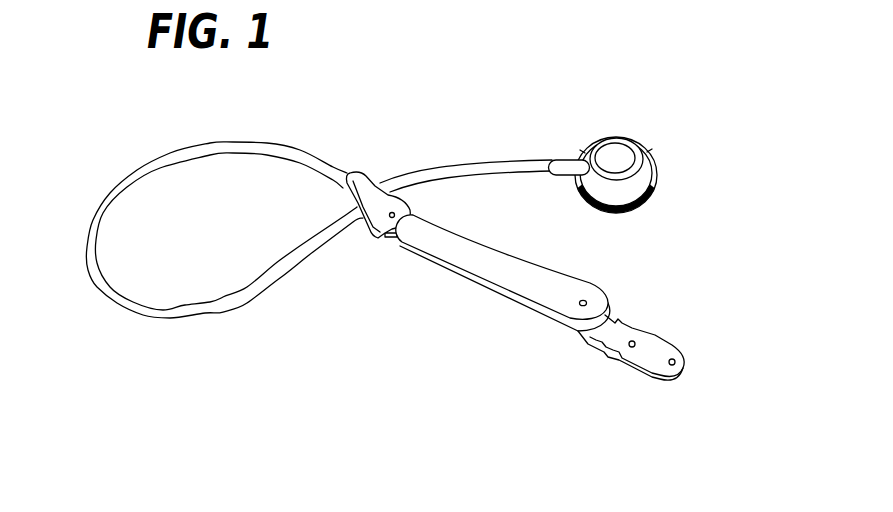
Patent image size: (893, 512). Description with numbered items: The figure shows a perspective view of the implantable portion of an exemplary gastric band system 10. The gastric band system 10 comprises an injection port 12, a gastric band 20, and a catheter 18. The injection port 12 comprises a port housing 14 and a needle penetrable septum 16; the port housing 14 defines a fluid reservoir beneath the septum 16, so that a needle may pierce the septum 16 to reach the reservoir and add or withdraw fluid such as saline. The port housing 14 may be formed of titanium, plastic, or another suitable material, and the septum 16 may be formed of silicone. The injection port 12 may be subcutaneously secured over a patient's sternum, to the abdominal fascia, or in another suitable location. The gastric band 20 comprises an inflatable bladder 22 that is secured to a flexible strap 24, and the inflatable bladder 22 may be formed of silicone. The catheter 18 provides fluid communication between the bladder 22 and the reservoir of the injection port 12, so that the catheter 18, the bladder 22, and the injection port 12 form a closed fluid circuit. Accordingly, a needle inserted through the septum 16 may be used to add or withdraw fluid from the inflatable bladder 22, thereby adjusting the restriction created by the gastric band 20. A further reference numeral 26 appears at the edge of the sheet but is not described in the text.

The gastric band system 10 is at (384, 100).
The injection port 12 is at (681, 176).
The port housing 14 is at (637, 140).
The needle penetrable septum 16 is at (615, 156).
The catheter 18 is at (120, 172).
The gastric band 20 is at (432, 295).
The inflatable bladder 22 is at (505, 295).
The flexible strap 24 is at (650, 352).
The component 26 is at (463, 507).